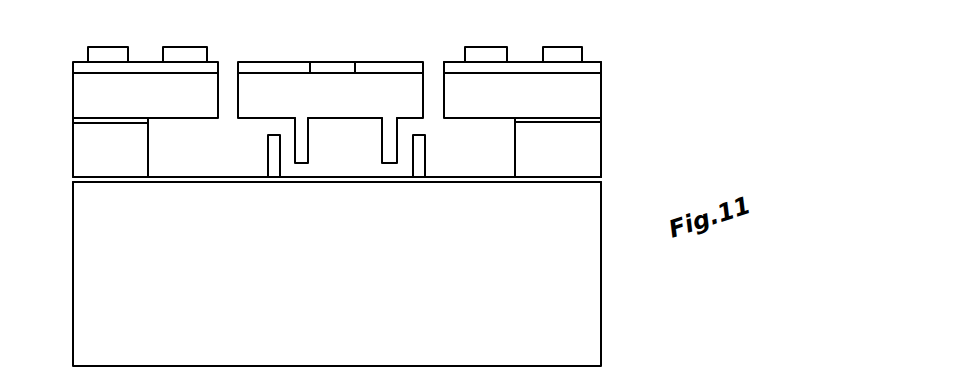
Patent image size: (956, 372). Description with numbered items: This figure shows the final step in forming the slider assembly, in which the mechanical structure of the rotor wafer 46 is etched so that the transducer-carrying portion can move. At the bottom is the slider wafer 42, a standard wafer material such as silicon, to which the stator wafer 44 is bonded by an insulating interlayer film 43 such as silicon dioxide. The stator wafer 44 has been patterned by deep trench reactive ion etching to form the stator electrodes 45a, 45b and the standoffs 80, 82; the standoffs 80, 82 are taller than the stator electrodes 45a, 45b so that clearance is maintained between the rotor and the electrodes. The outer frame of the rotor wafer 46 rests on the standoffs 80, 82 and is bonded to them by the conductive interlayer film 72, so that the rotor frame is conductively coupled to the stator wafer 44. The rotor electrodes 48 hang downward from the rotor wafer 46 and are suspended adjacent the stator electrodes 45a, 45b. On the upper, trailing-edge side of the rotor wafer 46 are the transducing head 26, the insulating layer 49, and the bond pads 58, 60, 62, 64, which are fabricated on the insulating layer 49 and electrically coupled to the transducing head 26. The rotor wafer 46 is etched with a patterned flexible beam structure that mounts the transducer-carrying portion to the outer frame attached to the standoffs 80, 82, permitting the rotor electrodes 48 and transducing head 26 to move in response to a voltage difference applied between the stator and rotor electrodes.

The transducing head 26 is at (328, 62).
The slider wafer 42 is at (601, 293).
The interlayer film 43 is at (73, 179).
The stator wafer 44 is at (601, 143).
The stator electrode 45a is at (266, 152).
The stator electrode 45b is at (425, 153).
The rotor wafer 46 is at (601, 95).
The rotor electrodes 48 is at (383, 143).
The insulating layer 49 is at (595, 68).
The bond pad 58 is at (558, 45).
The bond pad 60 is at (477, 45).
The bond pad 62 is at (103, 45).
The bond pad 64 is at (183, 45).
The conductive interlayer film 72 is at (73, 120).
The standoff 80 is at (590, 160).
The standoff 82 is at (73, 148).